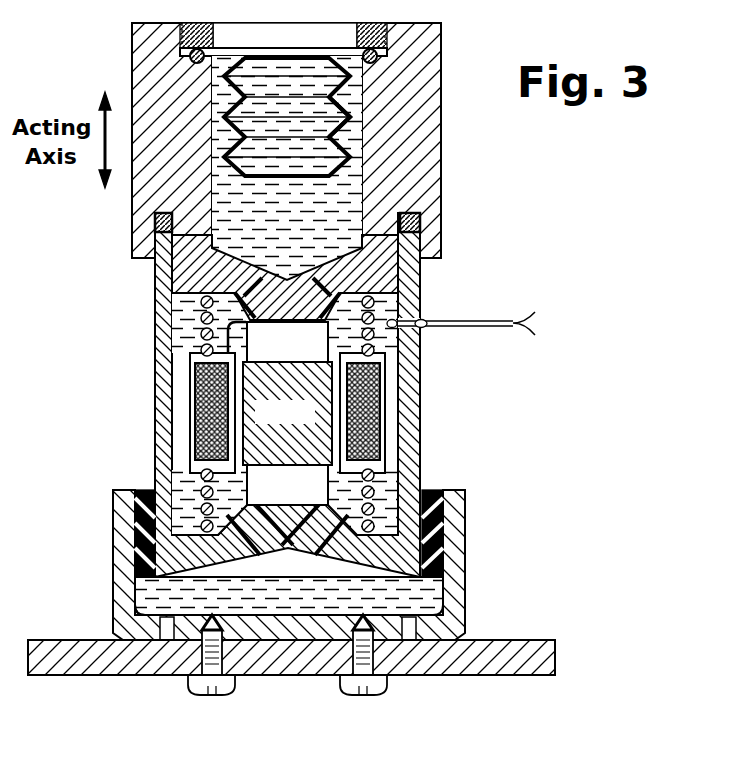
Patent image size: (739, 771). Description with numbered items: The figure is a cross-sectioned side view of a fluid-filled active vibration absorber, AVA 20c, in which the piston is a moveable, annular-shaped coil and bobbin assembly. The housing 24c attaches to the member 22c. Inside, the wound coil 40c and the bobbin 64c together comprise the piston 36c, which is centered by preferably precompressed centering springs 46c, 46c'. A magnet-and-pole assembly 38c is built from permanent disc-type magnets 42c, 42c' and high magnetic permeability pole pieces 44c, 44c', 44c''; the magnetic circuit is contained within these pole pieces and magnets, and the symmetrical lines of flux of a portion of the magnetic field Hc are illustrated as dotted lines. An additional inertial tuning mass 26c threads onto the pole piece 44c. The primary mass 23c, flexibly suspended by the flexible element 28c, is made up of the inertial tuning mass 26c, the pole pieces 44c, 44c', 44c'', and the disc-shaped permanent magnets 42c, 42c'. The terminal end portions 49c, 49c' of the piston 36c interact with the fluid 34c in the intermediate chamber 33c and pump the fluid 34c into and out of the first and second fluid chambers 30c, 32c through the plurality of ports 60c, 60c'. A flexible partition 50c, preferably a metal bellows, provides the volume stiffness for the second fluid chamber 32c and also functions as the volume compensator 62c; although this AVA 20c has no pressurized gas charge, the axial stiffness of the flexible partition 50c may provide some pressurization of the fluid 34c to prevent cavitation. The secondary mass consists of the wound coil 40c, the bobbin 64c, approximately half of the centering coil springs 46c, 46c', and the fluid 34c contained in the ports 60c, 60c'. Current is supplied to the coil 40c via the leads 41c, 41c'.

The AVA 20c is at (438, 383).
The member 22c is at (453, 677).
The primary mass 23c is at (120, 256).
The housing 24c is at (466, 560).
The additional inertial tuning mass 26c is at (430, 182).
The flexible element 28c is at (135, 530).
The first fluid chamber 30c is at (312, 597).
The second fluid chamber 32c is at (311, 217).
The intermediate chamber 33c is at (430, 485).
The fluid 34c is at (135, 597).
The piston 36c is at (401, 414).
The magnet-and-pole assembly 38c is at (140, 395).
The wound coil 40c is at (153, 365).
The lead 41c is at (536, 297).
The lead 41c' is at (493, 345).
The permanent disc-type magnet 42c is at (287, 485).
The permanent disc-type magnet 42c' is at (287, 342).
The pole piece 44c is at (351, 413).
The pole piece 44c' is at (287, 413).
The pole piece 44c'' is at (468, 242).
The centering spring 46c is at (454, 494).
The centering spring 46c' is at (445, 330).
The terminal end portion 49c is at (115, 461).
The terminal end portion 49c' is at (121, 281).
The flexible partition 50c is at (277, 176).
The port 60c is at (285, 534).
The port 60c' is at (285, 284).
The volume compensator 62c is at (366, 118).
The bobbin 64c is at (157, 340).
The magnetic field Hc is at (155, 430).